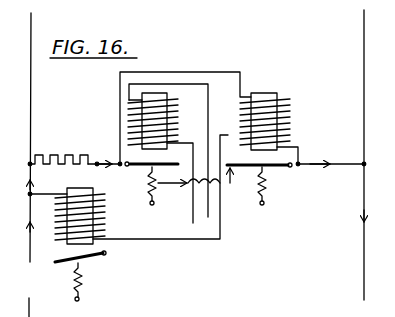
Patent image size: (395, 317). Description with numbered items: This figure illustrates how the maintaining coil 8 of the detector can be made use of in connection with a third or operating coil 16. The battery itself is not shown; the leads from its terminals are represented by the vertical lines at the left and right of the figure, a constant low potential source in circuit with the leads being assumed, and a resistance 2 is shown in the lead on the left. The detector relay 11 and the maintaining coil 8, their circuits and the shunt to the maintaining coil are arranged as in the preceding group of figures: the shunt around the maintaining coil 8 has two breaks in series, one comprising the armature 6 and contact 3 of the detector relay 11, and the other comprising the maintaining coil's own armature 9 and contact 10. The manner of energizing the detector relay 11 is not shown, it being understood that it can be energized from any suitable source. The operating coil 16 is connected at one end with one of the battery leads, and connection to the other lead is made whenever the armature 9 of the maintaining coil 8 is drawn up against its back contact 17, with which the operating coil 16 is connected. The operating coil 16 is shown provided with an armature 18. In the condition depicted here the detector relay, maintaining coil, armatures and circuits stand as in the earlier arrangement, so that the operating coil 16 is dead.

The resistor 2 is at (59, 152).
The contact 3 is at (166, 169).
The armature 6 is at (151, 183).
The maintaining coil 8 is at (271, 128).
The armature 9 is at (271, 186).
The contact 10 is at (232, 176).
The detector relay 11 is at (164, 158).
The operating coil 16 is at (78, 216).
The back contact 17 is at (232, 150).
The armature 18 is at (81, 276).